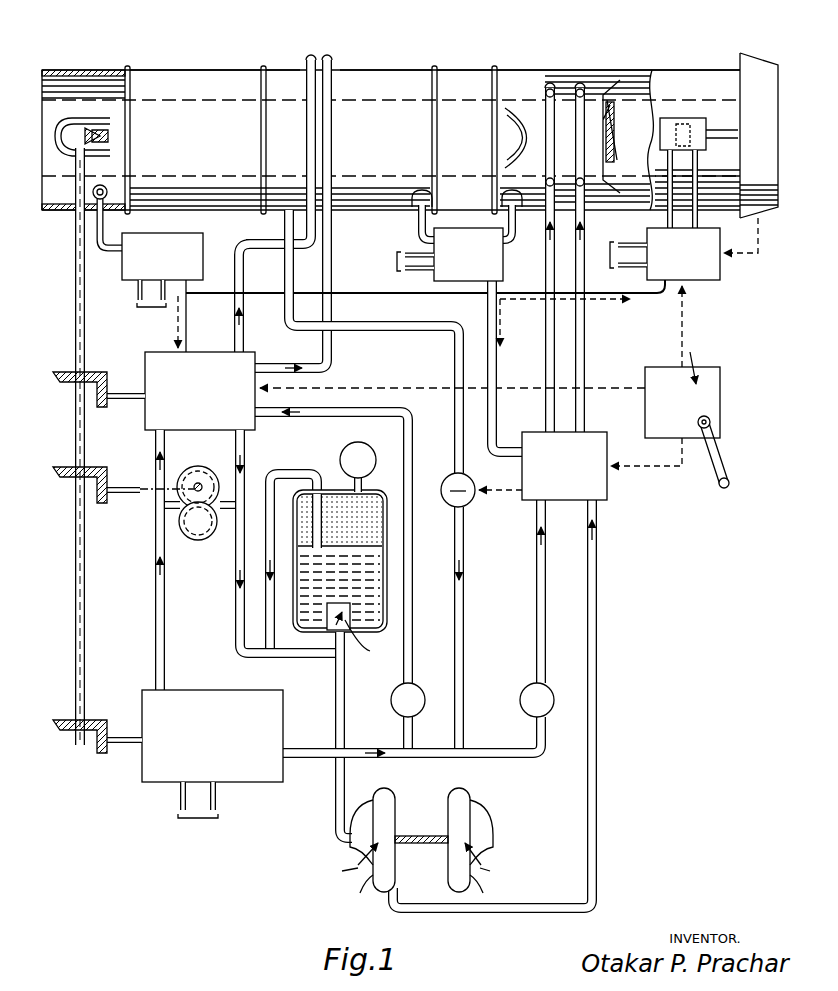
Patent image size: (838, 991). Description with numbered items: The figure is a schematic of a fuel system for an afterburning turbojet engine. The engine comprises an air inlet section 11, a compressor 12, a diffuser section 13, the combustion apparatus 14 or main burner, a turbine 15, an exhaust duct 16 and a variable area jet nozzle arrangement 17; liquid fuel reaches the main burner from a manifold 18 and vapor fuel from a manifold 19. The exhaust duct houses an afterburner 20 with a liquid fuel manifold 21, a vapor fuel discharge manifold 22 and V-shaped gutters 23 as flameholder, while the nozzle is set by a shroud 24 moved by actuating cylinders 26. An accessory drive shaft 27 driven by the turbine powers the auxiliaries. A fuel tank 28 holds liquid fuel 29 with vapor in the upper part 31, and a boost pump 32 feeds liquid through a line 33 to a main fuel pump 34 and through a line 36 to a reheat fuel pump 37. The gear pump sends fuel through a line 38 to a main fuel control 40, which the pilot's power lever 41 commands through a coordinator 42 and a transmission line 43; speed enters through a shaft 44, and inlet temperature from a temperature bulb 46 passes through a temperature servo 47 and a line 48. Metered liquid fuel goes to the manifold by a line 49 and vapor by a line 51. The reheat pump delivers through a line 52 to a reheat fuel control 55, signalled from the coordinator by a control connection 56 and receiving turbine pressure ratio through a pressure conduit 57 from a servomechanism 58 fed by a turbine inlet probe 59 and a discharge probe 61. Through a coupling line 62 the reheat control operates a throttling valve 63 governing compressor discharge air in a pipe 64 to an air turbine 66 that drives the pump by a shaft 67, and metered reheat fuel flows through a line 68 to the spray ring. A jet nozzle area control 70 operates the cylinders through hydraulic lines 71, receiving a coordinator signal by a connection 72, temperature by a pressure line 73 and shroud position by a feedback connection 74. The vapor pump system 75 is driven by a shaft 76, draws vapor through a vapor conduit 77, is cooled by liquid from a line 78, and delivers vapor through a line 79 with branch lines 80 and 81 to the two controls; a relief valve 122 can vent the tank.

The air inlet section 11 is at (55, 70).
The compressor 12 is at (208, 75).
The diffuser section 13 is at (264, 70).
The combustion apparatus 14 is at (395, 76).
The turbine 15 is at (468, 76).
The exhaust duct 16 is at (612, 72).
The variable area jet nozzle arrangement 17 is at (775, 68).
The manifold 18 is at (312, 56).
The manifold 19 is at (328, 56).
The afterburner 20 is at (568, 66).
The liquid fuel manifold 21 is at (550, 86).
The vapor fuel discharge manifold 22 is at (580, 86).
The annular V-shaped gutters 23 is at (620, 85).
The shroud 24 is at (743, 65).
The actuating cylinders 26 is at (700, 120).
The accessory drive shaft 27 is at (75, 262).
The fuel tank 28 is at (340, 551).
The liquid fuel 29 is at (293, 563).
The upper part of the tank 31 is at (362, 495).
The boost pump 32 is at (326, 628).
The line 33 is at (236, 590).
The main fuel pump 34 is at (195, 526).
The line 36 is at (336, 790).
The reheat fuel pump 37 is at (380, 880).
The line 38 is at (182, 468).
The main fuel control 40 is at (145, 410).
The pilot's power lever 41 is at (722, 455).
The coordinator 42 is at (720, 400).
The transmission line 43 is at (410, 388).
The shaft 44 is at (130, 392).
The temperature bulb 46 is at (107, 190).
The temperature servo 47 is at (203, 240).
The line 48 is at (188, 325).
The line 49 is at (270, 250).
The line 51 is at (332, 240).
The line 52 is at (598, 588).
The reheat fuel control 55 is at (607, 490).
The control connection 56 is at (655, 468).
The pressure conduit 57 is at (497, 350).
The turbine pressure ratio servomechanism 58 is at (503, 242).
The probe 59 is at (421, 190).
The probe 61 is at (512, 195).
The coupling line 62 is at (498, 493).
The throttling valve 63 is at (447, 478).
The pipe 64 is at (405, 321).
The air turbine 66 is at (480, 822).
The shaft 67 is at (420, 848).
The line 68 is at (546, 330).
The jet nozzle area control 70 is at (722, 272).
The hydraulic lines 71 is at (698, 165).
The connection 72 is at (684, 318).
The pressure line 73 is at (628, 296).
The feedback connection 74 is at (762, 240).
The vapor pump system 75 is at (228, 700).
The shaft 76 is at (128, 748).
The vapor conduit 77 is at (268, 660).
The line 78 is at (156, 645).
The line 79 is at (315, 750).
The branch line 80 is at (412, 538).
The branch line 81 is at (546, 580).
The relief valve 122 is at (348, 450).